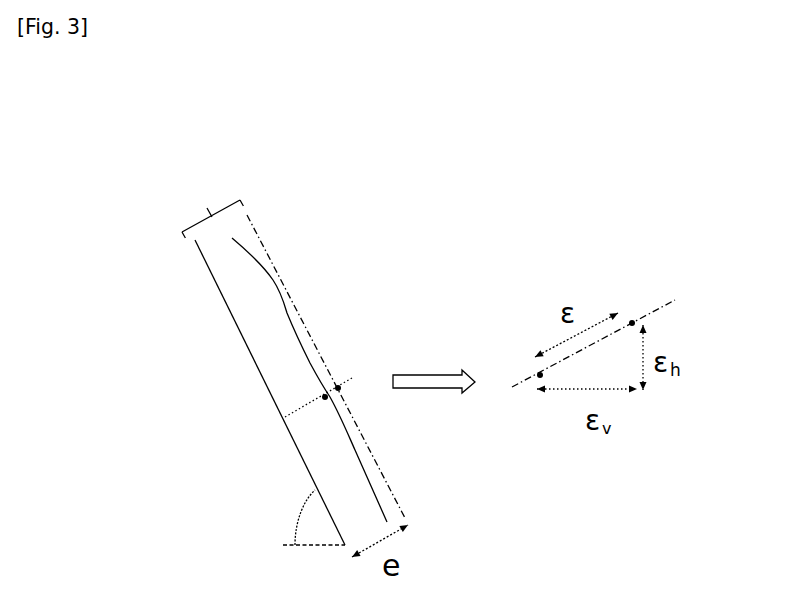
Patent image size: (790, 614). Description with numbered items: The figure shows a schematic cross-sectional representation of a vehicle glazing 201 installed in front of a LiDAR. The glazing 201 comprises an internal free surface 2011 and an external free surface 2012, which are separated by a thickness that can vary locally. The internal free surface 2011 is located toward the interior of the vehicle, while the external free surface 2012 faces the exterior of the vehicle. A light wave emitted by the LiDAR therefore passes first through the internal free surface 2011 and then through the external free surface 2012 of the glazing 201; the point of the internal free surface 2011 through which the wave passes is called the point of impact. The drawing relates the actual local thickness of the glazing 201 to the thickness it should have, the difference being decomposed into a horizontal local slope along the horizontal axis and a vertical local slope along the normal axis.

The glazing 201 is at (259, 356).
The internal free surface 2011 is at (203, 263).
The external free surface 2012 is at (273, 277).